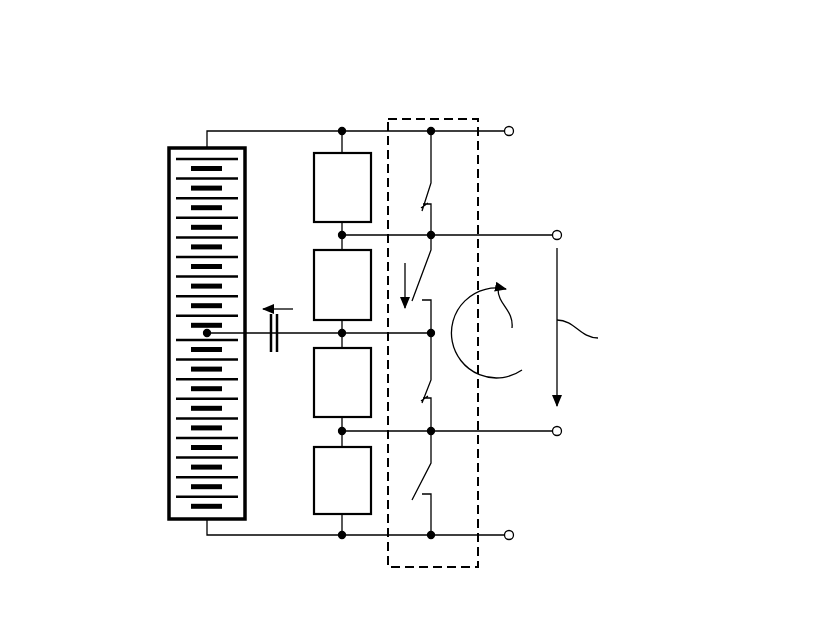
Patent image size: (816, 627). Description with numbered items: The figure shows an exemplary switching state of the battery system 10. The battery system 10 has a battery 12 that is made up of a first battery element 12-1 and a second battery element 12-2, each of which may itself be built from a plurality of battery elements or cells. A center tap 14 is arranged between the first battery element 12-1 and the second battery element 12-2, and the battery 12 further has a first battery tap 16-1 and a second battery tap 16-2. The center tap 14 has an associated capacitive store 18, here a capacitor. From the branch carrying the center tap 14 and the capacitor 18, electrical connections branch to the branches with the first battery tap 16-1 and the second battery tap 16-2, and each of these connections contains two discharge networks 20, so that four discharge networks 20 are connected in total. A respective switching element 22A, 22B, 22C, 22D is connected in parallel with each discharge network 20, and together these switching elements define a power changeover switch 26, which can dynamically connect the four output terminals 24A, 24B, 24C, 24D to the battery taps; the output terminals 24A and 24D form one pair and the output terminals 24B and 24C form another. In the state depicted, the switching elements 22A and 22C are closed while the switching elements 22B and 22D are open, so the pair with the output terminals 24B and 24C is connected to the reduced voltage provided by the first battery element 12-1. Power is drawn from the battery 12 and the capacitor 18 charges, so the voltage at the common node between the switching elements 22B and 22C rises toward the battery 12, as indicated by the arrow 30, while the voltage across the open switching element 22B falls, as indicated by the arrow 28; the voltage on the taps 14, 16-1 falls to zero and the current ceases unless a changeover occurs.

The battery system 10 is at (143, 107).
The battery 12 is at (166, 146).
The first battery element 12-1 is at (128, 145).
The second battery element 12-2 is at (128, 338).
The center tap 14 is at (206, 333).
The first battery tap 16-1 is at (202, 147).
The second battery tap 16-2 is at (207, 520).
The capacitive store 18 is at (276, 355).
The discharge network 20 is at (314, 188).
The switching element 22A is at (434, 182).
The switching element 22B is at (418, 290).
The switching element 22C is at (432, 383).
The switching element 22D is at (420, 475).
The output terminal 24A is at (514, 131).
The output terminal 24B is at (562, 235).
The output terminal 24C is at (562, 431).
The output terminal 24D is at (514, 535).
The power changeover switch 26 is at (452, 118).
The arrow 28 is at (407, 275).
The arrow 30 is at (280, 303).